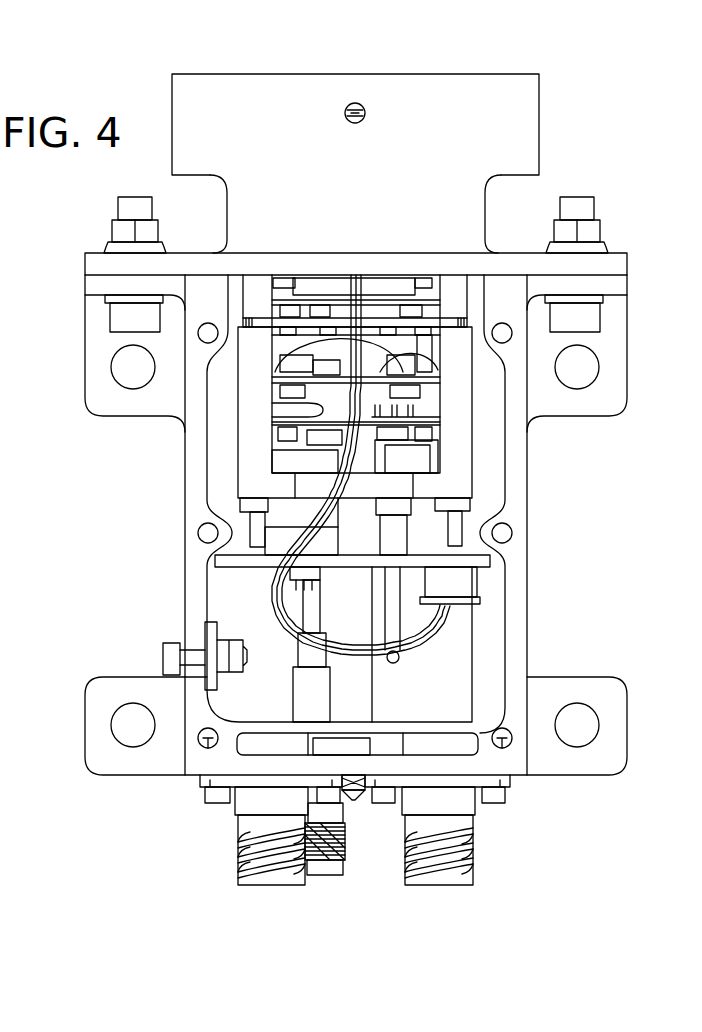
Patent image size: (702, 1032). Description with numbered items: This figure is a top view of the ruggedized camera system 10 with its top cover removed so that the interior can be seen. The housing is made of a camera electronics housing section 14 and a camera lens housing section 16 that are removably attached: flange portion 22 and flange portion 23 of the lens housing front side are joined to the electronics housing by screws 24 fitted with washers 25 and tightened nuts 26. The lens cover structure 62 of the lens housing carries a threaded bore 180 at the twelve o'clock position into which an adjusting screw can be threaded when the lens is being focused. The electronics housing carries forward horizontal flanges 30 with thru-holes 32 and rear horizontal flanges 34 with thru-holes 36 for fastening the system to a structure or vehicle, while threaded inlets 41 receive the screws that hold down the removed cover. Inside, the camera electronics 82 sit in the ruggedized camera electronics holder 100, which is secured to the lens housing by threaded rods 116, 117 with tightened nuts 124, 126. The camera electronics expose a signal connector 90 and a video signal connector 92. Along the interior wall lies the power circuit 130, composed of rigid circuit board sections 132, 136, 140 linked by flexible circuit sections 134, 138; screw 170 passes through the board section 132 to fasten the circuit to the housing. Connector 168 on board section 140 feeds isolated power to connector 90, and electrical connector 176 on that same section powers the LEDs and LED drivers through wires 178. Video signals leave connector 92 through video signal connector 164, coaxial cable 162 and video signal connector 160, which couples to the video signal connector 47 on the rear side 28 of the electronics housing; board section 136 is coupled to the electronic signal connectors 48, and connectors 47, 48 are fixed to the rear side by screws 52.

The ruggedized camera system 10 is at (334, 40).
The camera electronics housing section 14 is at (528, 445).
The camera lens housing section 16 is at (629, 263).
The flange portion 22 is at (180, 252).
The flange portion 23 is at (520, 256).
The screw 24 is at (109, 319).
The washer 25 is at (105, 250).
The nut 26 is at (108, 221).
The rear side 28 is at (508, 778).
The forward horizontal flange 30 is at (86, 372).
The thru-hole 32 is at (124, 358).
The rear horizontal flange 34 is at (86, 720).
The thru-hole 36 is at (143, 723).
The threaded inlet 41 is at (213, 322).
The video signal connector 47 is at (325, 876).
The electronic signal connector 48 is at (250, 885).
The screw 52 is at (217, 803).
The lens cover structure 62 is at (542, 135).
The camera electronics 82 is at (331, 350).
The signal connector 90 is at (287, 458).
The video signal connector 92 is at (397, 462).
The ruggedized camera electronics holder 100 is at (468, 473).
The threaded rod 116 is at (250, 527).
The threaded rod 117 is at (460, 522).
The nut 124 is at (258, 502).
The nut 126 is at (470, 503).
The power circuit 130 is at (205, 613).
The rigid circuit board section 132 is at (218, 630).
The flexible circuit section 134 is at (200, 693).
The rigid circuit board section 136 is at (397, 725).
The flexible circuit section 138 is at (473, 683).
The rigid circuit board section 140 is at (238, 563).
The video signal connector 160 is at (298, 676).
The coaxial cable 162 is at (393, 593).
The video signal connector 164 is at (412, 507).
The connector 168 is at (287, 515).
The screw 170 is at (163, 657).
The electrical connector 176 is at (478, 588).
The wires 178 is at (372, 290).
The threaded bore 180 is at (358, 103).